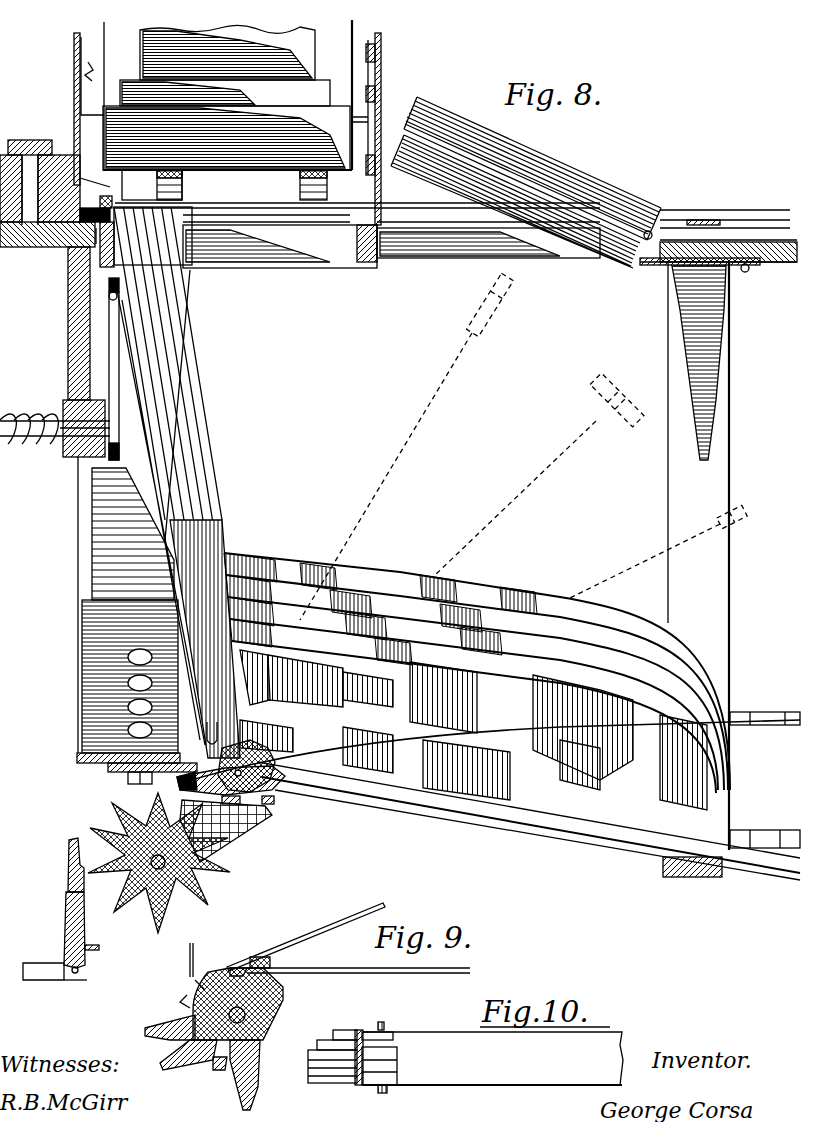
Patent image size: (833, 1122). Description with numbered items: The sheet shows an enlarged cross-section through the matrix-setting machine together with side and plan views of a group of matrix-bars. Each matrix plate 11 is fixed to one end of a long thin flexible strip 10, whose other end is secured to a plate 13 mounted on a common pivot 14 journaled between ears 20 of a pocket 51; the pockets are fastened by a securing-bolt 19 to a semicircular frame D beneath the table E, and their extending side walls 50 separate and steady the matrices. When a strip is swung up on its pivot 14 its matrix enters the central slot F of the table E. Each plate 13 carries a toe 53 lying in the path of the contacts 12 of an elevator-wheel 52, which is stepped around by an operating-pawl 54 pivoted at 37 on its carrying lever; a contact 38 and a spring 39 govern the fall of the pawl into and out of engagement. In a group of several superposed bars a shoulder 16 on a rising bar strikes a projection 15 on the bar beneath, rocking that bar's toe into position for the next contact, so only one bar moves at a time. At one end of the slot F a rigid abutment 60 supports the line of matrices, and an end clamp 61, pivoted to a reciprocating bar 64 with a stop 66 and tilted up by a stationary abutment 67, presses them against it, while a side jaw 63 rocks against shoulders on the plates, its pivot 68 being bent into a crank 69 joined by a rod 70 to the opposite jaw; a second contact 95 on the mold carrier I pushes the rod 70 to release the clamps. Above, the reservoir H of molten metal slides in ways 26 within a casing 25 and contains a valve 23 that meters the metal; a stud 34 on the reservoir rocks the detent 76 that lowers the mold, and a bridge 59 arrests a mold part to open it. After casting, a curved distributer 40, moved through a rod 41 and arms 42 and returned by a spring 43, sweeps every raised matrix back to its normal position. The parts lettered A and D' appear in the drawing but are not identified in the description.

In FIG. 8, the flexible strip 10 is at (195, 396).
In FIG. 9, the flexible strip 10 is at (194, 950).
In FIG. 10, the flexible strip 10 is at (348, 1033).
In FIG. 8, the matrix plate 11 is at (180, 238).
In FIG. 8, the contacts 12 is at (118, 815).
In FIG. 9, the plate 13 is at (285, 990).
In FIG. 8, the pivot 14 is at (243, 763).
In FIG. 9, the pivot 14 is at (272, 1022).
In FIG. 10, the pivot 14 is at (384, 1093).
In FIG. 9, the projection 15 is at (182, 1000).
In FIG. 9, the shoulder 16 is at (240, 965).
In FIG. 10, the shoulder 16 is at (398, 1058).
In FIG. 8, the securing-bolt 19 is at (128, 778).
In FIG. 8, the ears 20 is at (257, 837).
In FIG. 8, the plunger or valve 23 is at (225, 93).
In FIG. 8, the casing 25 is at (75, 118).
In FIG. 8, the ways 26 is at (86, 69).
In FIG. 8, the stud 34 is at (352, 119).
In FIG. 8, the pivot 37 is at (84, 980).
In FIG. 8, the contact 38 is at (99, 950).
In FIG. 8, the spring 39 is at (64, 921).
In FIG. 8, the distributer 40 is at (157, 462).
In FIG. 8, the rod 41 is at (52, 440).
In FIG. 8, the arms 42 is at (110, 404).
In FIG. 8, the spring 43 is at (28, 416).
In FIG. 8, the side walls 50 is at (528, 586).
In FIG. 8, the pockets 51 is at (586, 644).
In FIG. 8, the elevator-wheel 52 is at (163, 858).
In FIG. 8, the toe 53 is at (257, 810).
In FIG. 9, the toe 53 is at (195, 1062).
In FIG. 10, the toe 53 is at (308, 1074).
In FIG. 8, the operating-pawl 54 is at (68, 878).
In FIG. 8, the bridge 59 is at (22, 140).
In FIG. 8, the rigid abutment 60 is at (109, 290).
In FIG. 8, the end clamp 61 is at (560, 170).
In FIG. 8, the jaw 63 is at (280, 246).
In FIG. 8, the reciprocating bar 64 is at (748, 226).
In FIG. 8, the stop 66 is at (645, 268).
In FIG. 8, the stationary abutment 67 is at (660, 266).
In FIG. 8, the pivot 68 is at (358, 243).
In FIG. 8, the cranks 69 is at (102, 244).
In FIG. 8, the rod 70 is at (85, 215).
In FIG. 8, the detent 76 is at (376, 93).
In FIG. 8, the second contact 95 is at (98, 195).
In FIG. 8, the frame rail A is at (147, 213).
In FIG. 8, the semicircular frame D is at (137, 614).
In FIG. 8, the column D' is at (698, 556).
In FIG. 8, the table E is at (38, 273).
In FIG. 8, the slot F is at (245, 216).
In FIG. 8, the reservoir H is at (312, 42).
In FIG. 8, the carrier I is at (55, 188).